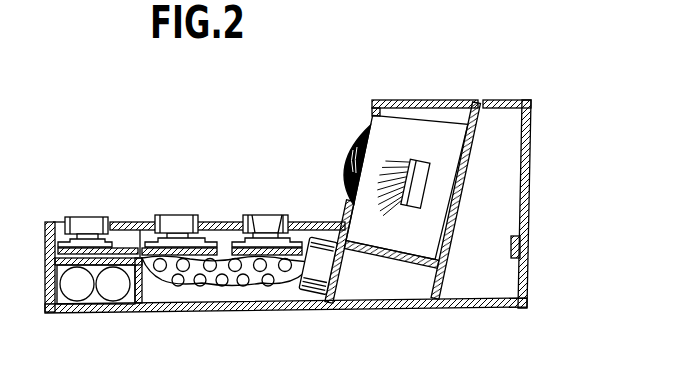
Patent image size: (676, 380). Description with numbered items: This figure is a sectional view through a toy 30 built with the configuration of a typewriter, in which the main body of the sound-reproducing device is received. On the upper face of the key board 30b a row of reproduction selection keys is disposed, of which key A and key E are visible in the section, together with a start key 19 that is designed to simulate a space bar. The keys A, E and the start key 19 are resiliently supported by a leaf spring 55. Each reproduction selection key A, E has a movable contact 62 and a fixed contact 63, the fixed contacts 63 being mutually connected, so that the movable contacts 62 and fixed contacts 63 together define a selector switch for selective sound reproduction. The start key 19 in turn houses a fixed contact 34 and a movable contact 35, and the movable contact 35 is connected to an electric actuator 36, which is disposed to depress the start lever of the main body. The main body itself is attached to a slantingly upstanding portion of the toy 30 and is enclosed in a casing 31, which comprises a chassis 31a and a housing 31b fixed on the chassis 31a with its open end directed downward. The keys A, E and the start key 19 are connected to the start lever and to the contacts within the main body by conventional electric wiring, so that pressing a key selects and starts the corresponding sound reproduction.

The toy 30 is at (533, 104).
The key board 30b is at (489, 106).
The casing 31 is at (389, 242).
The chassis 31a is at (397, 132).
The housing 31b is at (448, 165).
The fixed contact 34 is at (58, 226).
The movable contact 35 is at (78, 236).
The start key 19 is at (97, 222).
The leaf spring 55 is at (118, 246).
The reproduction selection key E is at (186, 217).
The reproduction selection key A is at (262, 216).
The movable contact 62 is at (272, 250).
The fixed contact 63 is at (254, 242).
The electric actuator 36 is at (330, 288).